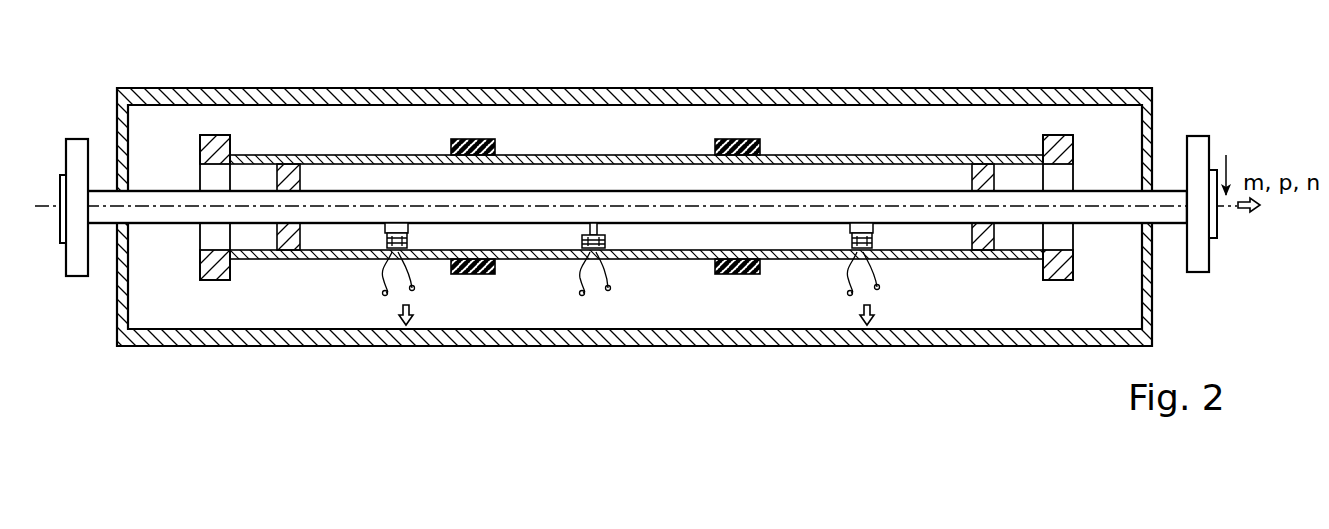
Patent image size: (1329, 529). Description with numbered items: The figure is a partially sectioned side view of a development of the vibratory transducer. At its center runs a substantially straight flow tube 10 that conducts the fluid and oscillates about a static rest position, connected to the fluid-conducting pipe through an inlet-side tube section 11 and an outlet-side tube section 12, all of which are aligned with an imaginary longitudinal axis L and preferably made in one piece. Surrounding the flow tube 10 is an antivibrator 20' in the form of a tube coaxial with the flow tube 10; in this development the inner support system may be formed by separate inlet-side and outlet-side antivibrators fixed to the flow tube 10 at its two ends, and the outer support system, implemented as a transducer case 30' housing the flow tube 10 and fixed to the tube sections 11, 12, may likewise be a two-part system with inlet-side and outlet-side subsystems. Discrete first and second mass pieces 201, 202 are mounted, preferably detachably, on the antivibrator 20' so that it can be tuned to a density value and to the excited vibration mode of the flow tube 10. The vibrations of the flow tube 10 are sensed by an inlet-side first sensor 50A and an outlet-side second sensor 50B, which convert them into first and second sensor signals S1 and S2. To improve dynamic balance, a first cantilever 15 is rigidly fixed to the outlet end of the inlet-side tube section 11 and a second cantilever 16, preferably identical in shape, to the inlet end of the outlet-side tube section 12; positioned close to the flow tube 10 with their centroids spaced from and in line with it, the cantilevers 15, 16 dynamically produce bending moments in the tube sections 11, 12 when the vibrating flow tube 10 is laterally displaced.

The transducer case 30' is at (634, 187).
The antivibrator 20' is at (636, 187).
The flow tube 10 is at (553, 202).
The inlet-side tube section 11 is at (213, 203).
The outlet-side tube section 12 is at (1060, 212).
The first mass piece 201 is at (457, 147).
The second mass piece 202 is at (750, 140).
The first cantilever 15 is at (190, 240).
The second cantilever 16 is at (1085, 233).
The first sensor 50A is at (363, 241).
The second sensor 50B is at (827, 242).
The first sensor signal S1 is at (420, 312).
The second sensor signal S2 is at (881, 312).
The longitudinal axis L is at (1226, 162).